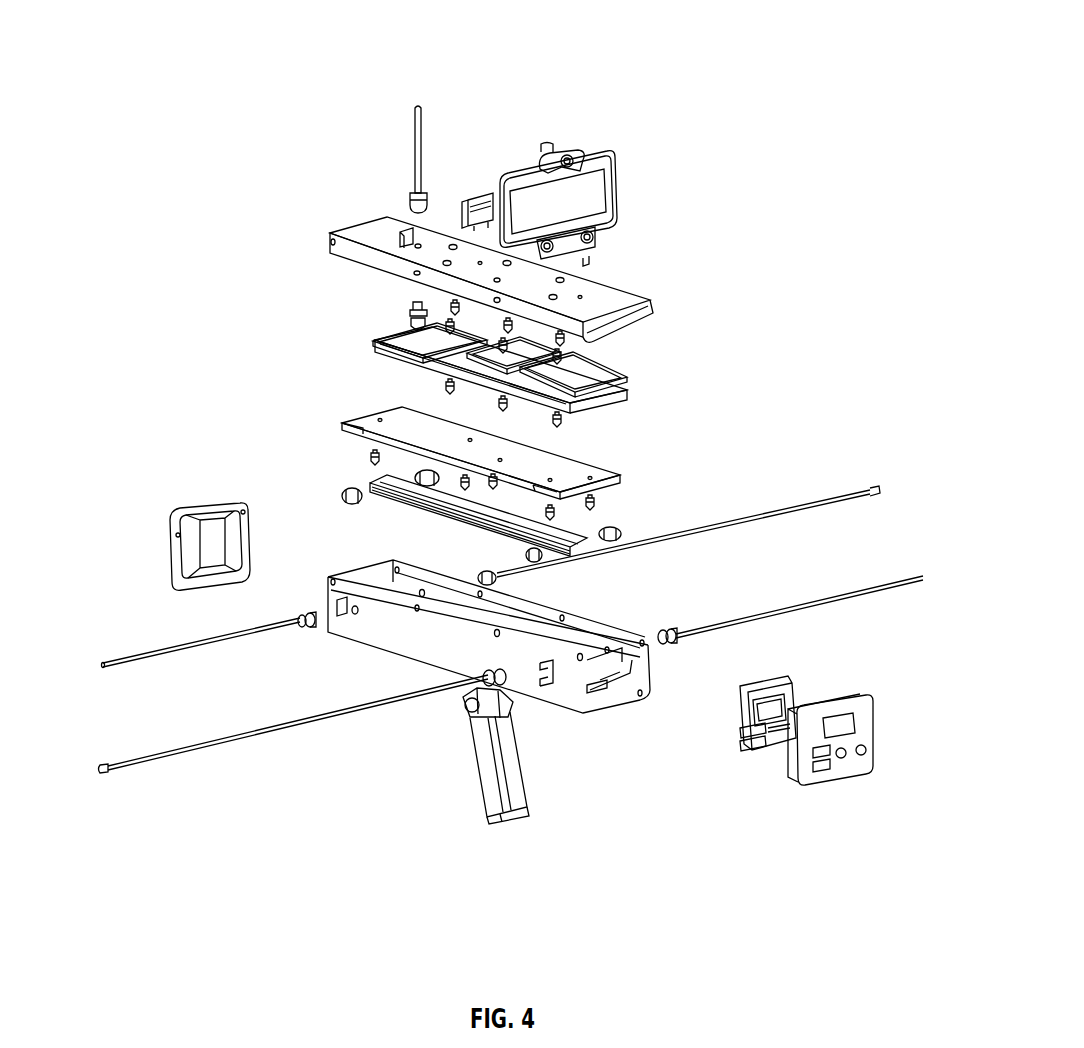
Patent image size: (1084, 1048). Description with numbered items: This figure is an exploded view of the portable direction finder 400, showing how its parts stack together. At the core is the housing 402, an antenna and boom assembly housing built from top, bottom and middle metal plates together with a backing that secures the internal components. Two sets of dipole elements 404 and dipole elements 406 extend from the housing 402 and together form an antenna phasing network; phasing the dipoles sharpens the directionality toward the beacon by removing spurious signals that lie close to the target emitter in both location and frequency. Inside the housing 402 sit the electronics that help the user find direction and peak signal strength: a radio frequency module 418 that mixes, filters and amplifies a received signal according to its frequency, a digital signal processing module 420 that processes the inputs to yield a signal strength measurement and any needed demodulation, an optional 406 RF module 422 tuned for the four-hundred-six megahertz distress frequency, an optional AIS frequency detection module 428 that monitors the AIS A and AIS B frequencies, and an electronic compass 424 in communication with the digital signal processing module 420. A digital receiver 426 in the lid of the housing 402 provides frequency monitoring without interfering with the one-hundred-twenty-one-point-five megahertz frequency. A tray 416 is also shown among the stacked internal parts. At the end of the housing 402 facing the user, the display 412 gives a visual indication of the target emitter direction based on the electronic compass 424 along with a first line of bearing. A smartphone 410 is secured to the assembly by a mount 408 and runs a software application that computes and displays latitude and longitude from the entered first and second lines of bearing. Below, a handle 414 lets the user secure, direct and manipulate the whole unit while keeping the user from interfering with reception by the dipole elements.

The portable direction finder 400 is at (827, 64).
The housing 402 is at (383, 613).
The dipole elements 404 is at (107, 673).
The dipole elements 406 is at (925, 577).
The mount 408 is at (572, 156).
The smartphone 410 is at (600, 190).
The display 412 is at (797, 700).
The handle 414 is at (492, 792).
The sensor tray 416 is at (620, 397).
The radio frequency module 418 is at (437, 337).
The digital signal processing module 420 is at (405, 424).
The 406 RF module 422 is at (583, 372).
The electronic compass 424 is at (578, 540).
The digital receiver 426 is at (650, 298).
The AIS frequency detection module 428 is at (413, 327).